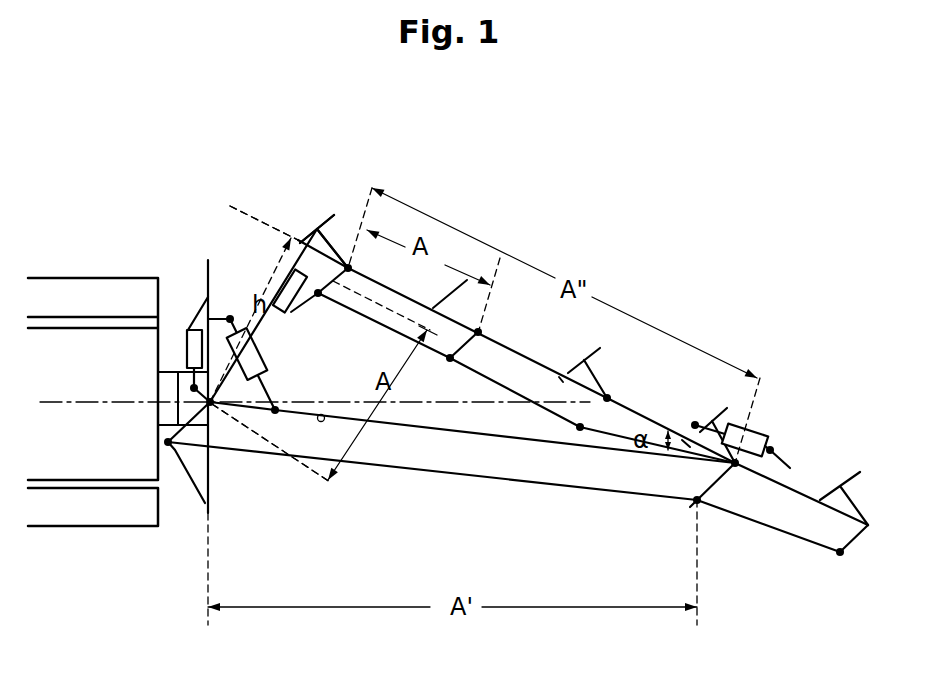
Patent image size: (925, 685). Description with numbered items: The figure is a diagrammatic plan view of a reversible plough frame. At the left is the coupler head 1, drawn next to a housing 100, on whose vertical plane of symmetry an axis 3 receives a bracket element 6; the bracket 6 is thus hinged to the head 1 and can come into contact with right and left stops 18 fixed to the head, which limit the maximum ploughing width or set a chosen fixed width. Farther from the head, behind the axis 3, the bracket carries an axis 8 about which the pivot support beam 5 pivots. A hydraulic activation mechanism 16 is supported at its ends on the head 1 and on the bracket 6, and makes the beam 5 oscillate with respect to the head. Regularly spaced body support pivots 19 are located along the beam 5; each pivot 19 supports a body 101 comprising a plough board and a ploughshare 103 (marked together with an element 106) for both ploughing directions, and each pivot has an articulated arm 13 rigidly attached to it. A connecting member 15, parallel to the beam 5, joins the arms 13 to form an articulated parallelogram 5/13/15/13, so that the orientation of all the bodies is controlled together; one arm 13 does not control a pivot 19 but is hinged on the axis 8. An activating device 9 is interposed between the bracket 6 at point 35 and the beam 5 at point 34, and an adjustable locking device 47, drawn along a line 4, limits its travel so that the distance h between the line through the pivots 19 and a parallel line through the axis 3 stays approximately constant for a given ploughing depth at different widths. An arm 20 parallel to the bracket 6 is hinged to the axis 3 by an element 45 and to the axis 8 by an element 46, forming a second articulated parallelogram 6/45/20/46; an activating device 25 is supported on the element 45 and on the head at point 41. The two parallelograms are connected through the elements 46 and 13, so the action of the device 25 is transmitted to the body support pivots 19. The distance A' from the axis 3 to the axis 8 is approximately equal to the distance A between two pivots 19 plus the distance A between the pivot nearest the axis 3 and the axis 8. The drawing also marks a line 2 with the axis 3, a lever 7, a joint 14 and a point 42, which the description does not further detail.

The coupler head 1 is at (188, 473).
The lever 2 is at (258, 428).
The axis 3 is at (258, 428).
The axis 4 is at (258, 223).
The pivot support beam 5 is at (532, 360).
The bracket element 6 is at (471, 434).
The lever 7 is at (311, 275).
The axis 8 is at (734, 467).
The activating device 9 is at (771, 449).
The articulated arm 13 is at (838, 554).
The joint 14 is at (696, 503).
The connecting member 15 is at (845, 556).
The hydraulic activation mechanism 16 is at (241, 331).
The stops 18 is at (262, 397).
The body support pivots 19 is at (609, 397).
The arm 20 is at (430, 472).
The activating device 25 is at (190, 350).
The point 34 is at (695, 422).
The point 35 is at (775, 455).
The point 41 is at (189, 333).
The pivot 42 is at (325, 422).
The element 45 is at (198, 453).
The element 46 is at (718, 481).
The adjustable locking device 47 is at (258, 223).
The drive shaft 100 is at (110, 350).
The body 101 is at (350, 263).
The ploughshare 103 is at (313, 233).
The bearing 106 is at (313, 233).